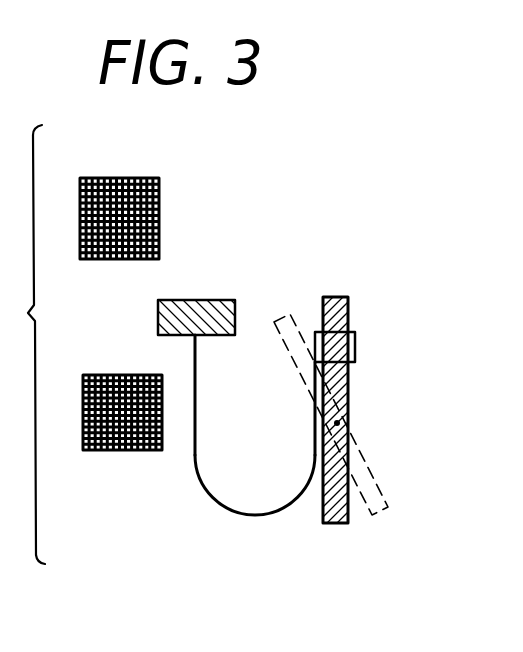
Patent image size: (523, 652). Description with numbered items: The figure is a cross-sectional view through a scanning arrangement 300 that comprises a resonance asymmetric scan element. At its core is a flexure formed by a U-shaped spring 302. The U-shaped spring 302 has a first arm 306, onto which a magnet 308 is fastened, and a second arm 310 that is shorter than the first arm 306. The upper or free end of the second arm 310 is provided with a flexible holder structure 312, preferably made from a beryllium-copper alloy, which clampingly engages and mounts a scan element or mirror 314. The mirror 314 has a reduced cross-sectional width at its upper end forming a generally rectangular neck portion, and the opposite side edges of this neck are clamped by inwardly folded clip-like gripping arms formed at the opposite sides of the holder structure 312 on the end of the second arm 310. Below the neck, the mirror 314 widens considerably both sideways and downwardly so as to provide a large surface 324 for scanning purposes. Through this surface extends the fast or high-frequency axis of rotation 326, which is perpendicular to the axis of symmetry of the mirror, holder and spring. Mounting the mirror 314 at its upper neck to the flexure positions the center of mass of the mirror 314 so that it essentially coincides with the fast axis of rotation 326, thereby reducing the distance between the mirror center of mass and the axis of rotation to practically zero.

The scanning arrangement 300 is at (350, 186).
The U-shaped spring 302 is at (253, 512).
The first arm 306 is at (193, 468).
The magnet 308 is at (195, 298).
The second arm 310 is at (315, 452).
The flexible holder structure 312 is at (313, 333).
The mirror 314 is at (348, 383).
The large surface 324 is at (347, 462).
The fast axis of rotation 326 is at (349, 407).